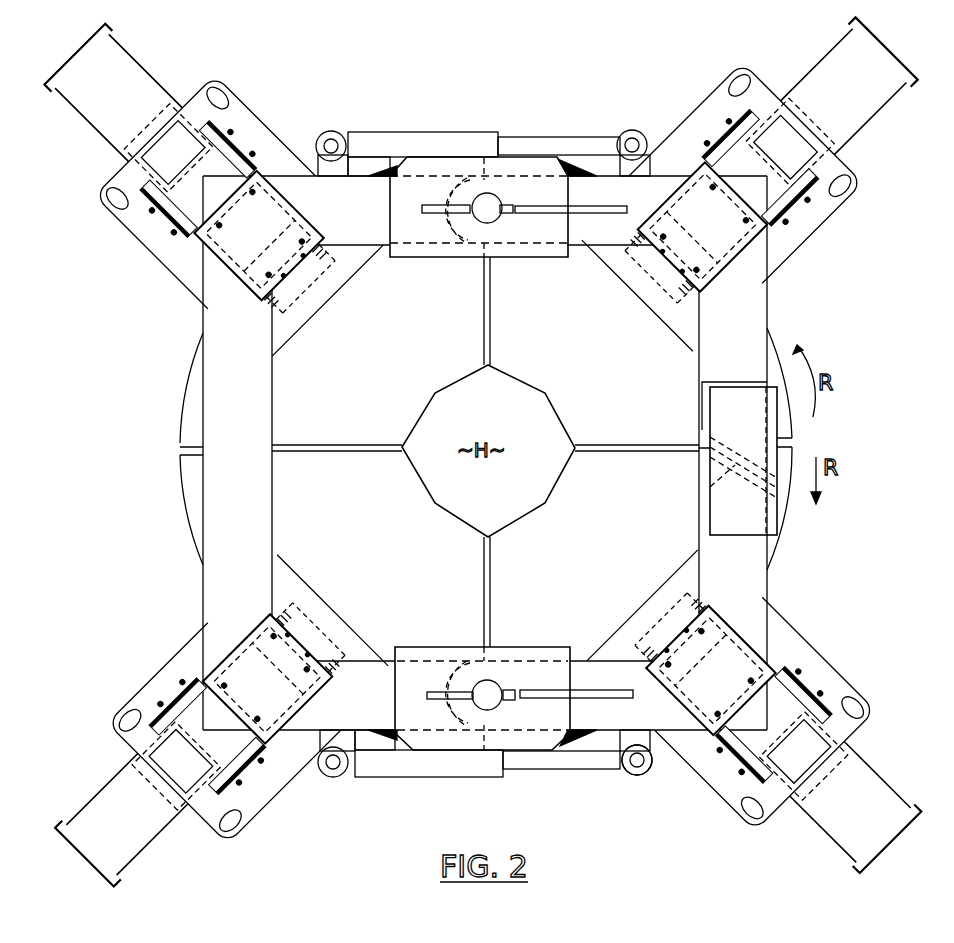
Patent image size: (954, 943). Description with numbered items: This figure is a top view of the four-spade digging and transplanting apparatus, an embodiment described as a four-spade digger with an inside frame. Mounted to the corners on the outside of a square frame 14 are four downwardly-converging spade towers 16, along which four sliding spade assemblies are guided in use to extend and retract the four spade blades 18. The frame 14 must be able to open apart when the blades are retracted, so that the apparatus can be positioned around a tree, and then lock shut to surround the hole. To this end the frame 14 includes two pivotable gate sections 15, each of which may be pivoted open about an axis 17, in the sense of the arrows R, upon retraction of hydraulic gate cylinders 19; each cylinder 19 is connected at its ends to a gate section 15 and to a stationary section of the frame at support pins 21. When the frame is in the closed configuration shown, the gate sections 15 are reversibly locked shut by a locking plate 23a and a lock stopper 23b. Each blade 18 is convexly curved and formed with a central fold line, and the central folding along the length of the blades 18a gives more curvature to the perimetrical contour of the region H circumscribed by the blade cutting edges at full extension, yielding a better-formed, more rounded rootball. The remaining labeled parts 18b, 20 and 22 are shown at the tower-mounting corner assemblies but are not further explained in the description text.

The square frame 14 is at (698, 367).
The pivotable gate sections 15 is at (746, 328).
The spade towers 16 is at (877, 93).
The axis 17 is at (477, 710).
The spade blades 18 is at (720, 117).
The blades 18a is at (633, 353).
The plate portion 18b is at (803, 233).
The hydraulic gate cylinders 19 is at (470, 777).
The clamp 20 is at (820, 113).
The support pins 21 is at (638, 783).
The clamp plate 22 is at (717, 153).
The locking plate 23a is at (782, 500).
The lock stopper 23b is at (700, 492).